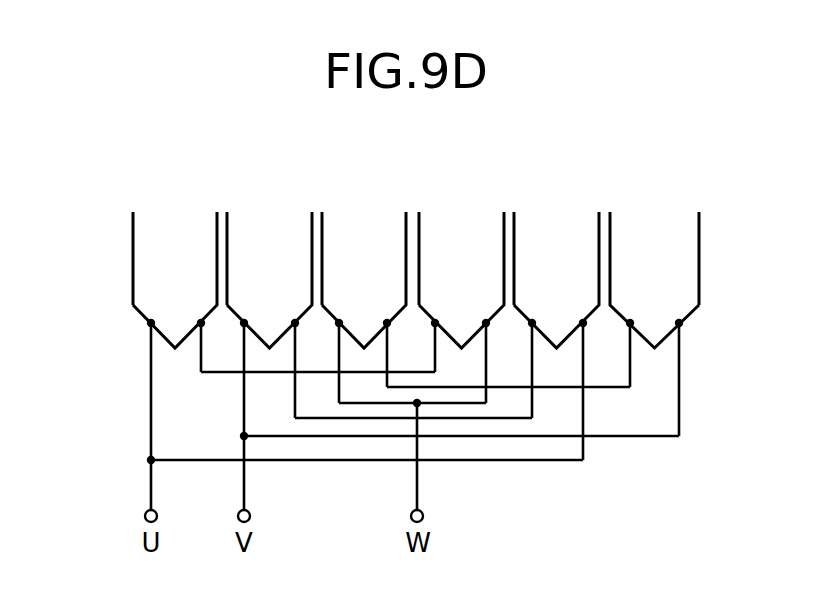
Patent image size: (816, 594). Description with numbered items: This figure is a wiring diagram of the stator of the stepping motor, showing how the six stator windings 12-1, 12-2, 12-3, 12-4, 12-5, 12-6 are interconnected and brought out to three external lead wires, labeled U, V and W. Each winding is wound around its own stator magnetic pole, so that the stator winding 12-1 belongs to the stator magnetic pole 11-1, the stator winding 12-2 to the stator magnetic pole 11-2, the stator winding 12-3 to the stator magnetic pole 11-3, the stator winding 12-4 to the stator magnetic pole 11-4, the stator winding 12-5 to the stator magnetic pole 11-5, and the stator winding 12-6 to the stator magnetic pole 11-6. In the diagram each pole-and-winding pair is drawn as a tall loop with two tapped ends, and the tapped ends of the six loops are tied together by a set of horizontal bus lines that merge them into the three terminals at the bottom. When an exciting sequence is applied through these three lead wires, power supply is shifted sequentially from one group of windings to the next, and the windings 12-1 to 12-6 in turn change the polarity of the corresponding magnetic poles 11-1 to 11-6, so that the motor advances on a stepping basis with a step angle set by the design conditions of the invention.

The stator magnetic pole 11-1 is at (175, 280).
The stator magnetic pole 11-2 is at (269, 280).
The stator magnetic pole 11-3 is at (364, 280).
The stator magnetic pole 11-4 is at (461, 280).
The stator magnetic pole 11-5 is at (556, 280).
The stator magnetic pole 11-6 is at (654, 280).
The stator winding 12-1 is at (133, 228).
The stator winding 12-2 is at (229, 222).
The stator winding 12-3 is at (325, 220).
The stator winding 12-4 is at (421, 218).
The stator winding 12-5 is at (514, 217).
The stator winding 12-6 is at (699, 220).